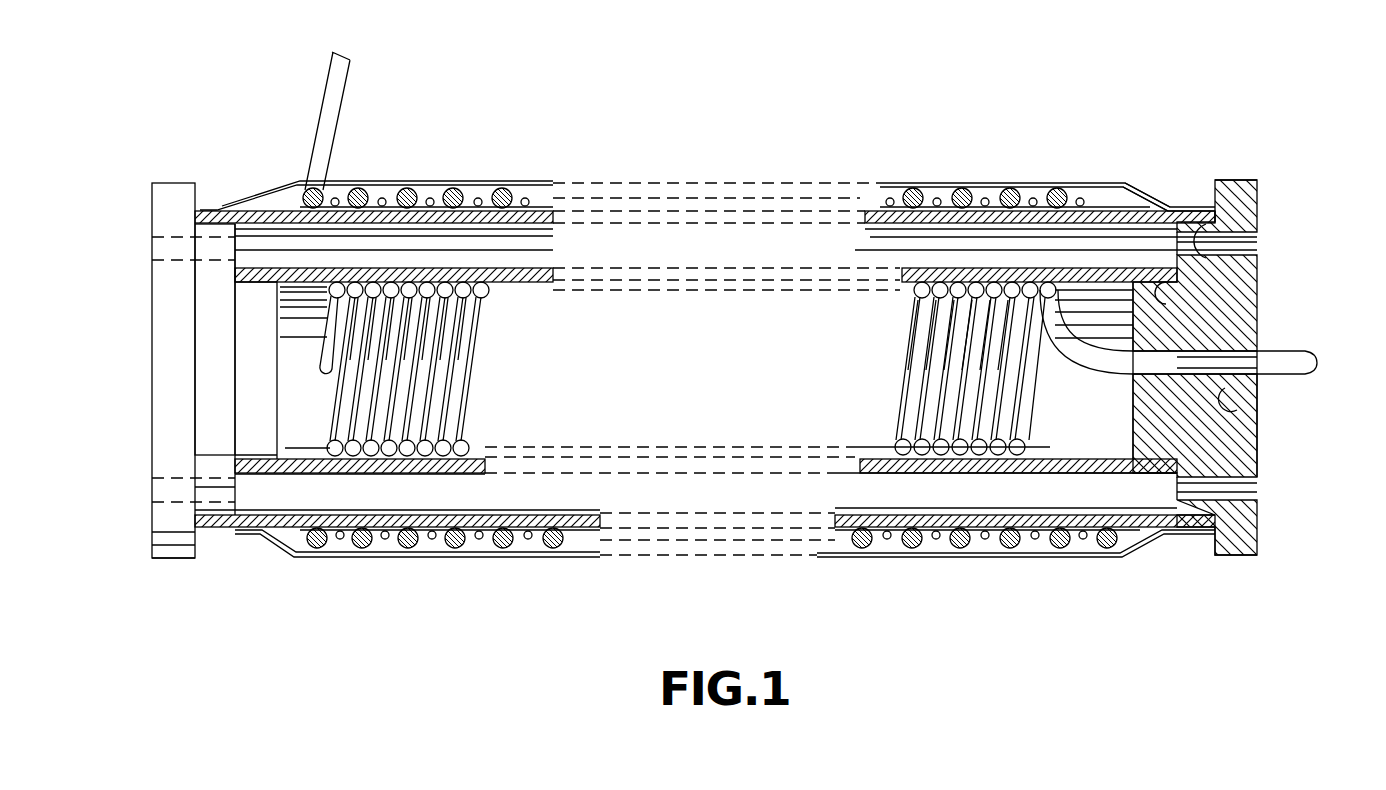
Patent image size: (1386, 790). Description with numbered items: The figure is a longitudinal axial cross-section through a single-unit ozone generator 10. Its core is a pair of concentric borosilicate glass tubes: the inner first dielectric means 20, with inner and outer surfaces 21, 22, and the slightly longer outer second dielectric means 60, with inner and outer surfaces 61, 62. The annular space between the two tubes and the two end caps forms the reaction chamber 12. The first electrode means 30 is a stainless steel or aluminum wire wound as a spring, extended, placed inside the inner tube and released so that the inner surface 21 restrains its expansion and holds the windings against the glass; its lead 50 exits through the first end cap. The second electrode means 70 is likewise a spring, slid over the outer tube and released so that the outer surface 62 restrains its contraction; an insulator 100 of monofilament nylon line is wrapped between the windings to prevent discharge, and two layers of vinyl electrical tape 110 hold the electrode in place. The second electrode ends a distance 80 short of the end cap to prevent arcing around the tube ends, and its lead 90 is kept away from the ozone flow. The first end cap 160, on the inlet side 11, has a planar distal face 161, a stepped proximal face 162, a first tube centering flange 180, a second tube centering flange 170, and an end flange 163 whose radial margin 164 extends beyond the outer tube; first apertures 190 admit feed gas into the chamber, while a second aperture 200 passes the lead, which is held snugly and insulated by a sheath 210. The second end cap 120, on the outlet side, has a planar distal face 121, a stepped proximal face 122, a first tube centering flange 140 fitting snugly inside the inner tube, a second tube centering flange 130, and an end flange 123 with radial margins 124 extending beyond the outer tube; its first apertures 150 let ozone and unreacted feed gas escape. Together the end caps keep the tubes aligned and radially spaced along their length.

The ozone generator 10 is at (1188, 208).
The inlet side 11 is at (1262, 530).
The reaction chamber 12 is at (448, 497).
The first dielectric means 20 is at (880, 463).
The inner surface of first dielectric means 21 is at (625, 457).
The outer surface of first dielectric means 22 is at (578, 474).
The first electrode means 30 is at (978, 454).
The lead 50 is at (1305, 352).
The second dielectric means 60 is at (878, 216).
The inner surface of second dielectric means 61 is at (688, 225).
The outer surface of second dielectric means 62 is at (641, 212).
The second electrode means 70 is at (415, 190).
The distance 80 is at (1165, 206).
The lead 90 is at (332, 100).
The insulator 100 is at (532, 203).
The tape 110 is at (345, 182).
The second end cap 120 is at (183, 188).
The distal face of second end cap 121 is at (158, 412).
The proximal face of second end cap 122 is at (280, 400).
The end flange 123 is at (157, 538).
The radial margins 124 is at (176, 558).
The second tube centering flange 130 is at (205, 278).
The first tube centering flange 140 is at (248, 324).
The first apertures 150 is at (160, 488).
The first end cap 160 is at (1247, 208).
The distal face of first end cap 161 is at (1262, 450).
The proximal face of first end cap 162 is at (1133, 410).
The end flange 163 is at (1250, 216).
The radial margin 164 is at (1255, 185).
The second tube centering flange 170 is at (1235, 262).
The first tube centering flange 180 is at (1170, 298).
The first apertures 190 is at (1248, 493).
The second aperture 200 is at (1262, 410).
The sheath 210 is at (1262, 348).